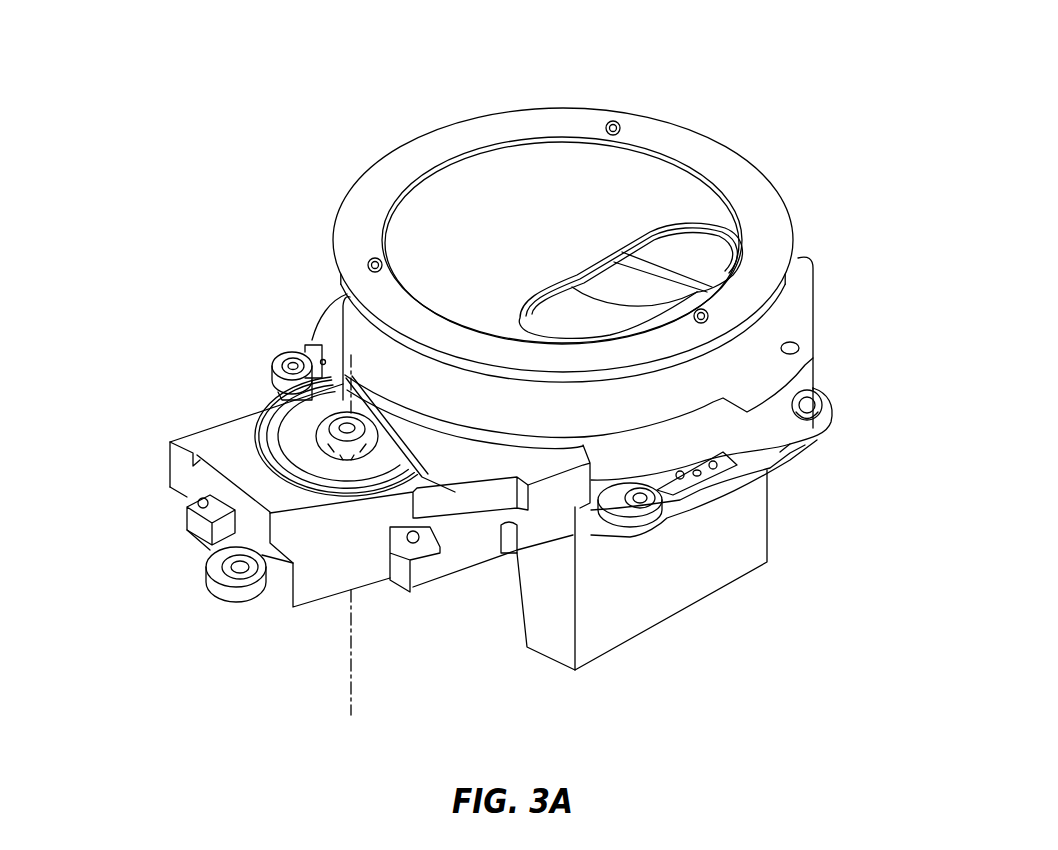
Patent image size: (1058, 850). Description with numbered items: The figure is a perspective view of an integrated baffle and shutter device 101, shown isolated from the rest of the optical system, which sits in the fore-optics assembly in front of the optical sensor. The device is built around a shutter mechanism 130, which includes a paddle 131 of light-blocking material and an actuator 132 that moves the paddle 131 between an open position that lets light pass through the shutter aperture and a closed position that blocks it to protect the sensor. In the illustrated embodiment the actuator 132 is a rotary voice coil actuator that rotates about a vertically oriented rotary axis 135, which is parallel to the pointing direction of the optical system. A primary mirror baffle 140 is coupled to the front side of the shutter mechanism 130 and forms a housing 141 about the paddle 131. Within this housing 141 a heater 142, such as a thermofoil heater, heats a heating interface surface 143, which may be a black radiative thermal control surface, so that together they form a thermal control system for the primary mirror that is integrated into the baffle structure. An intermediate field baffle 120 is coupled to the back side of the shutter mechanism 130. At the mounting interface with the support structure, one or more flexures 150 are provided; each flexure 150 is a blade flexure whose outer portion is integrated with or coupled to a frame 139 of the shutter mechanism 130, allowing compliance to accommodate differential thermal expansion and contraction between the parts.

The integrated baffle and shutter device 101 is at (393, 79).
The intermediate field baffle 120 is at (685, 580).
The shutter mechanism 130 is at (158, 457).
The paddle 131 is at (633, 302).
The actuator 132 is at (247, 381).
The rotary axis 135 is at (348, 668).
The frame 139 is at (763, 463).
The primary mirror baffle 140 is at (351, 169).
The housing 141 is at (662, 192).
The heater 142 is at (690, 252).
The heating interface surface 143 is at (378, 337).
The flexure 150 is at (843, 407).